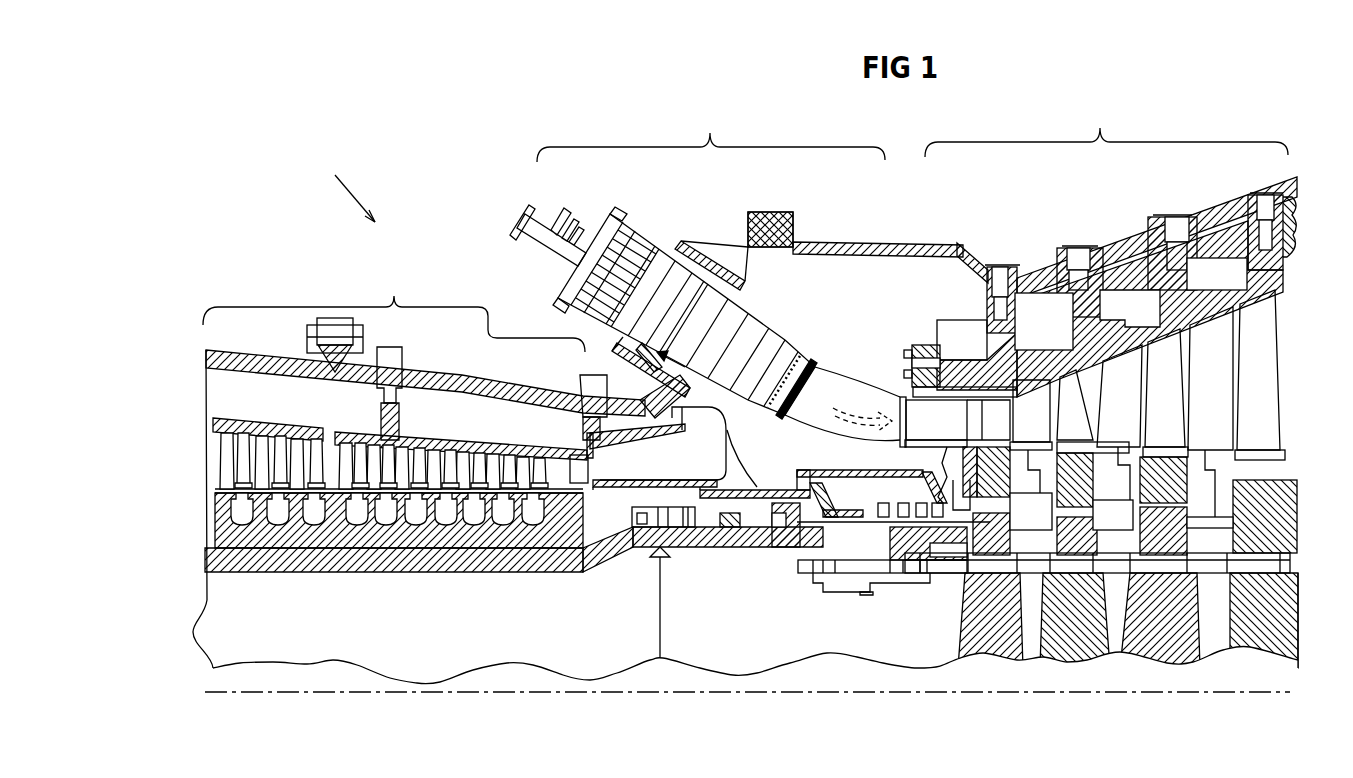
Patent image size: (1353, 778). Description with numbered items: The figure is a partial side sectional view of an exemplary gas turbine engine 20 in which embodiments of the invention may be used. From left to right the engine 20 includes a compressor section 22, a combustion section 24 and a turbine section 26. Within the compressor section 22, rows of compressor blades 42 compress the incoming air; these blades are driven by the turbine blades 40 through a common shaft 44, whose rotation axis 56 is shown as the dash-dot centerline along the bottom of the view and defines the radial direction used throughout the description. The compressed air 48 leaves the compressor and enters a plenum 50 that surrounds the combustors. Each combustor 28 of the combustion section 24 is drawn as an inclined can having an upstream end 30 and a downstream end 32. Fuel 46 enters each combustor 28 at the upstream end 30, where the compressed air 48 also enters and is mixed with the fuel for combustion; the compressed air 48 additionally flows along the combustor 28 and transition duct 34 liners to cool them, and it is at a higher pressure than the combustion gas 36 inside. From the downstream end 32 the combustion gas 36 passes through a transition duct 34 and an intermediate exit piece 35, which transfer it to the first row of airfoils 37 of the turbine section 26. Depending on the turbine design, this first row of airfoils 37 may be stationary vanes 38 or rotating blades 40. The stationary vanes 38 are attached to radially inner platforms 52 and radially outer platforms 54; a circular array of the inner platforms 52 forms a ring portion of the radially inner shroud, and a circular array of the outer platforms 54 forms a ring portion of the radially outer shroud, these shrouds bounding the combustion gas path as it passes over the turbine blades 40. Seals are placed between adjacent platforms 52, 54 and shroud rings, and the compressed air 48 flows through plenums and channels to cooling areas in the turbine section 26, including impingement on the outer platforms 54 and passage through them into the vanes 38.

The gas turbine engine 20 is at (340, 184).
The compressor section 22 is at (424, 362).
The combustion section 24 is at (762, 246).
The turbine section 26 is at (1111, 214).
The combustor 28 is at (698, 320).
The upstream end 30 is at (650, 300).
The downstream end 32 is at (735, 340).
The transition duct 34 is at (847, 390).
The intermediate exit piece 35 is at (950, 436).
The combustion gas 36 is at (865, 410).
The first row of airfoils 37 is at (993, 410).
The stationary vanes 38 is at (1218, 360).
The turbine blades 40 is at (1272, 448).
The compressor blades 42 is at (295, 450).
The shaft 44 is at (730, 533).
The fuel 46 is at (513, 213).
The compressed air 48 is at (657, 460).
The plenum 50 is at (874, 304).
The inner platforms 52 is at (1203, 472).
The outer platforms 54 is at (1205, 298).
The rotation axis 56 is at (743, 692).